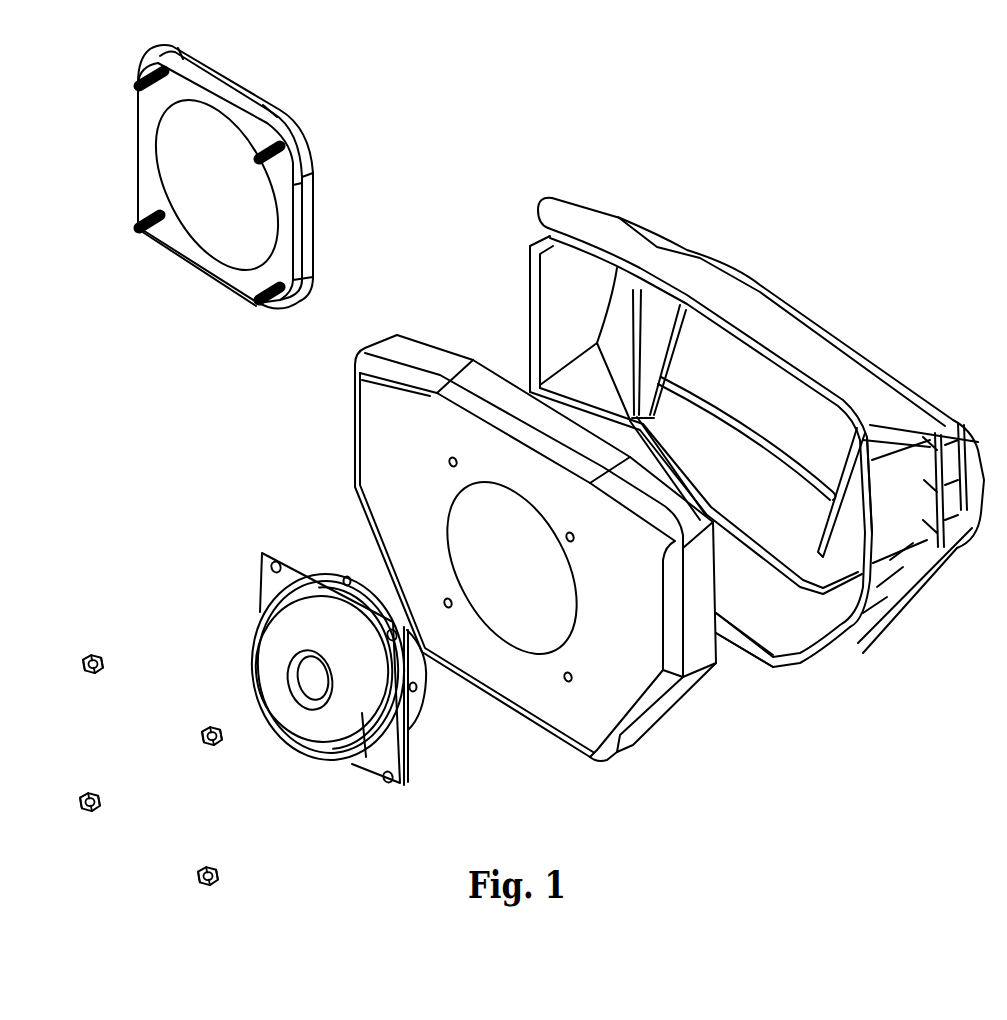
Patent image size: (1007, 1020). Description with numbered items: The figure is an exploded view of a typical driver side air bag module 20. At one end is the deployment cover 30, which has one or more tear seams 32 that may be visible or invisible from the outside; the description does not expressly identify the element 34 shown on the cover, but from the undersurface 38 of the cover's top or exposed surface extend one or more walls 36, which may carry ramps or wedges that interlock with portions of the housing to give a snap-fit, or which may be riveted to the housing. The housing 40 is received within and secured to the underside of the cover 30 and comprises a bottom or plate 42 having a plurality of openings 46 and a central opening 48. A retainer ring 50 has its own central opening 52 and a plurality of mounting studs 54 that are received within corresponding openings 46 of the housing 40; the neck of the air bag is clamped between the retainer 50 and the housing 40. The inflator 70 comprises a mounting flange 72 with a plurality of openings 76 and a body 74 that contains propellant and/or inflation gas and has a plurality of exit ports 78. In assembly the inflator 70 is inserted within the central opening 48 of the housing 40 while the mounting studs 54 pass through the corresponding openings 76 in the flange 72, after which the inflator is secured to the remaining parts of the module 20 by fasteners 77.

The driver side air bag module 20 is at (522, 148).
The deployment cover 30 is at (757, 468).
The tear seam 32 is at (687, 380).
The rear wall 34 is at (810, 430).
The walls 36 is at (817, 660).
The undersurface 38 is at (787, 497).
The housing 40 is at (405, 330).
The plate 42 is at (388, 462).
The openings 46 is at (459, 462).
The central opening 48 is at (457, 557).
The retainer 50 is at (245, 69).
The central opening 52 is at (189, 100).
The mounting studs 54 is at (138, 87).
The inflator 70 is at (328, 672).
The mounting flange 72 is at (290, 566).
The body 74 is at (359, 753).
The openings 76 is at (268, 553).
The fasteners 77 is at (80, 676).
The exit ports 78 is at (348, 577).